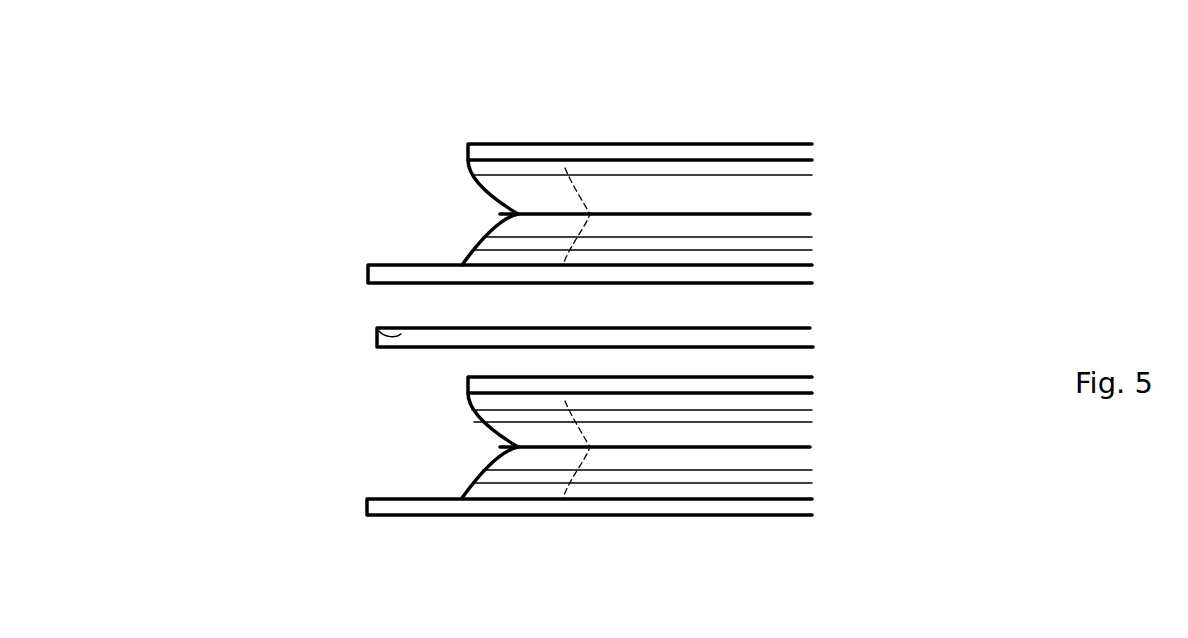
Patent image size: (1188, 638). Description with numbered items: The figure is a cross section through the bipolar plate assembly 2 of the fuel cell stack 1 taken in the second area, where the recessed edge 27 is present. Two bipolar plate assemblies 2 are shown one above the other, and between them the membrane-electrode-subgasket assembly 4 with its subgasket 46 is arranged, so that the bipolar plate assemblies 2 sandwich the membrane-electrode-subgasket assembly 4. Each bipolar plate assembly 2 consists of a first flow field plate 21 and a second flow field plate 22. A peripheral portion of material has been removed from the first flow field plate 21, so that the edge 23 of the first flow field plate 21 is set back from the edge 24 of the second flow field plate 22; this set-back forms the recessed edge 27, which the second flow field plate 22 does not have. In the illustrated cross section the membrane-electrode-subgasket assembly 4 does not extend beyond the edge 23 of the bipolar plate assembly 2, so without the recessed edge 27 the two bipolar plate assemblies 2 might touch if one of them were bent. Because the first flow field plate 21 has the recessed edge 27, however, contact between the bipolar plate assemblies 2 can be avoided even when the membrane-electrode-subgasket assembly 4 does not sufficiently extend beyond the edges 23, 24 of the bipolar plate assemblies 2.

The fuel cell stack 1 is at (601, 62).
The bipolar plate assembly 2 is at (808, 214).
The membrane-electrode-subgasket assembly 4 is at (800, 340).
The first flow field plate 21 is at (765, 178).
The second flow field plate 22 is at (802, 484).
The edge of the first flow field plate 23 is at (660, 150).
The edge of the second flow field plate 24 is at (367, 272).
The recessed edge 27 is at (468, 152).
The subgasket 46 is at (377, 332).